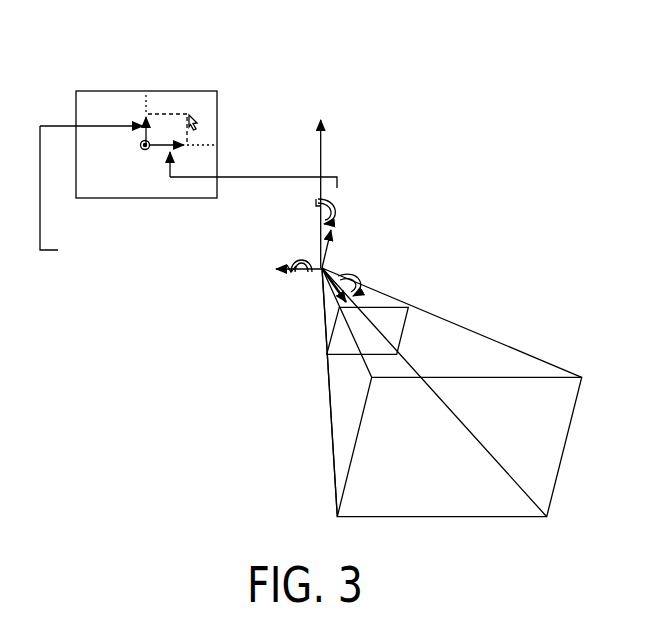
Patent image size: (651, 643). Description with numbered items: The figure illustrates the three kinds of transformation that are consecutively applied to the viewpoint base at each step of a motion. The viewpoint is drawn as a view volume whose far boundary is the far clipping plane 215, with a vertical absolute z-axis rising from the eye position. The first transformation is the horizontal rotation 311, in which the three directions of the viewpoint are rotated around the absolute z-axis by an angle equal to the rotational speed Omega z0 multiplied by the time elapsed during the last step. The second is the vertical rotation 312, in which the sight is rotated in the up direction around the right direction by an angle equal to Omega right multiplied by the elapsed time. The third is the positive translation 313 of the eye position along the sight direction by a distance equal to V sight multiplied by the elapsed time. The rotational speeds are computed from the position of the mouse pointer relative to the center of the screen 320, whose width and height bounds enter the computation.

The screen 320 is at (158, 113).
The far clipping plane 215 is at (321, 153).
The horizontal rotation 311 is at (362, 202).
The positive translation of the eye position 313 is at (340, 265).
The vertical rotation 312 is at (67, 258).